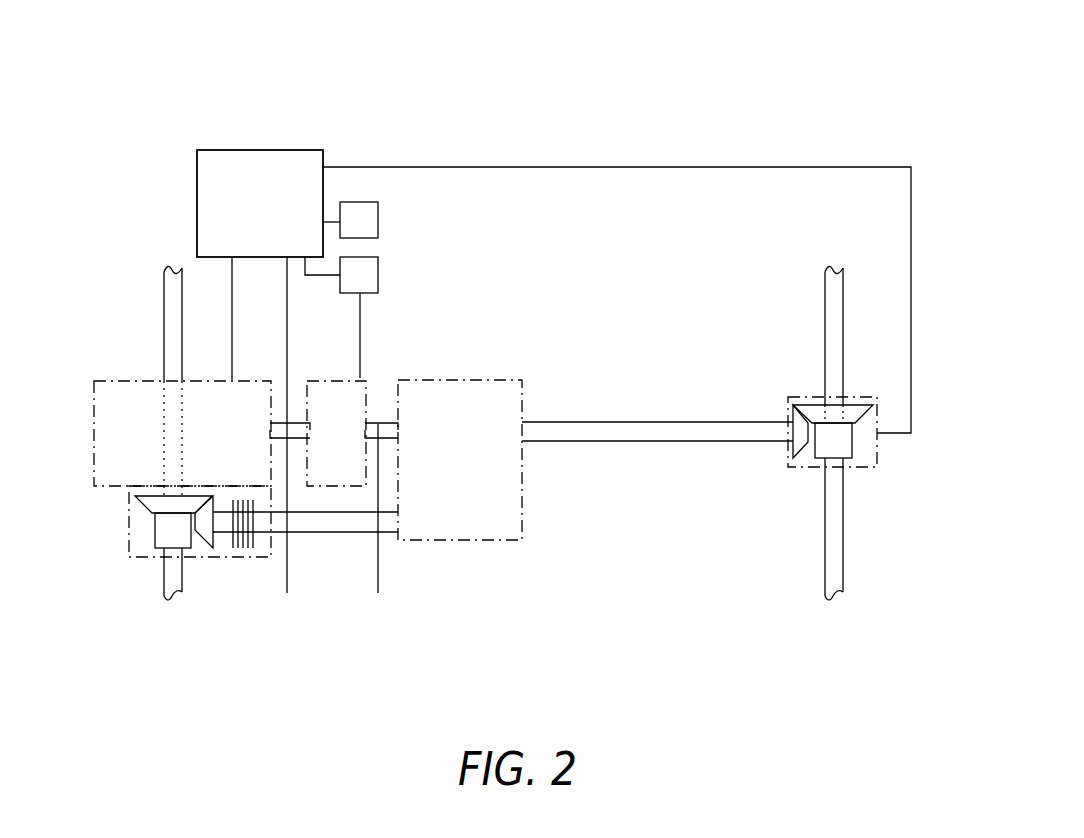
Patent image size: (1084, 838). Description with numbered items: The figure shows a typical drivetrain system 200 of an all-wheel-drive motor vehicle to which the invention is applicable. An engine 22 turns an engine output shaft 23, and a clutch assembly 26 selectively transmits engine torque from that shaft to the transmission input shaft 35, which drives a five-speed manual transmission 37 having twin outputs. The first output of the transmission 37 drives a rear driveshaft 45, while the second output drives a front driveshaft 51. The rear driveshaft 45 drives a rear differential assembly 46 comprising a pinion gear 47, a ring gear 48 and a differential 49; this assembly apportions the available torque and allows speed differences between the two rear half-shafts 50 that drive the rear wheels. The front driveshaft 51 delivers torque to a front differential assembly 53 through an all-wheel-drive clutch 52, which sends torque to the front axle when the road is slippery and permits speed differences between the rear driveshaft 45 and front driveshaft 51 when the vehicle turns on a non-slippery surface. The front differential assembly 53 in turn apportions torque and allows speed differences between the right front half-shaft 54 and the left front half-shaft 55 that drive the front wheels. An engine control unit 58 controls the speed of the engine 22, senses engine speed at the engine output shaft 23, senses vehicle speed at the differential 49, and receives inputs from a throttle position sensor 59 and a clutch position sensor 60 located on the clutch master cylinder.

The drivetrain system 200 is at (533, 33).
The engine control unit 58 is at (260, 186).
The throttle position sensor 59 is at (359, 220).
The clutch position sensor 60 is at (359, 275).
The engine 22 is at (182, 433).
The engine output shaft 23 is at (290, 440).
The clutch assembly 26 is at (336, 433).
The transmission input shaft 35 is at (381, 523).
The five-speed manual transmission 37 is at (460, 460).
The rear driveshaft 45 is at (657, 447).
The rear differential assembly 46 is at (849, 445).
The pinion gear 47 is at (800, 421).
The ring gear 48 is at (818, 413).
The differential 49 is at (833, 440).
The rear half-shafts 50 is at (855, 433).
The front driveshaft 51 is at (305, 536).
The all-wheel-drive clutch 52 is at (243, 546).
The front differential assembly 53 is at (183, 521).
The right front half-shaft 54 is at (155, 574).
The left front half-shaft 55 is at (156, 381).